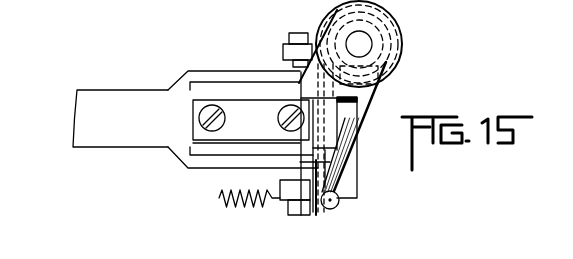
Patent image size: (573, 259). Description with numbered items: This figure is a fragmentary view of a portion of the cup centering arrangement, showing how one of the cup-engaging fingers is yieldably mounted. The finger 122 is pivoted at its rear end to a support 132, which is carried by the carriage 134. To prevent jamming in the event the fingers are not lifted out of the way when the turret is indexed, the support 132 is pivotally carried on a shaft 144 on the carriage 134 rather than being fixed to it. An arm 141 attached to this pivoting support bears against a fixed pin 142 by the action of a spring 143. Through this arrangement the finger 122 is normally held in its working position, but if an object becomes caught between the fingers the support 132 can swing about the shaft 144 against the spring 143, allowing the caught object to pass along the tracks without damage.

The finger 122 is at (199, 72).
The support 132 is at (381, 74).
The carriage 134 is at (152, 139).
The arm 141 is at (343, 186).
The fixed pin 142 is at (302, 212).
The spring 143 is at (231, 208).
The shaft 144 is at (357, 45).